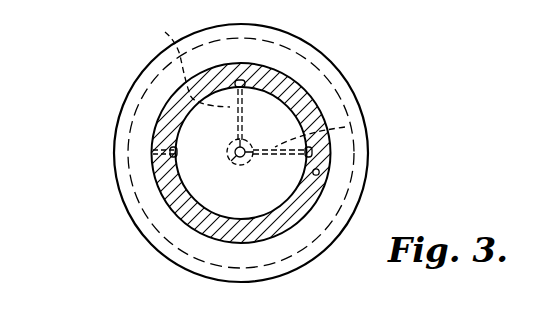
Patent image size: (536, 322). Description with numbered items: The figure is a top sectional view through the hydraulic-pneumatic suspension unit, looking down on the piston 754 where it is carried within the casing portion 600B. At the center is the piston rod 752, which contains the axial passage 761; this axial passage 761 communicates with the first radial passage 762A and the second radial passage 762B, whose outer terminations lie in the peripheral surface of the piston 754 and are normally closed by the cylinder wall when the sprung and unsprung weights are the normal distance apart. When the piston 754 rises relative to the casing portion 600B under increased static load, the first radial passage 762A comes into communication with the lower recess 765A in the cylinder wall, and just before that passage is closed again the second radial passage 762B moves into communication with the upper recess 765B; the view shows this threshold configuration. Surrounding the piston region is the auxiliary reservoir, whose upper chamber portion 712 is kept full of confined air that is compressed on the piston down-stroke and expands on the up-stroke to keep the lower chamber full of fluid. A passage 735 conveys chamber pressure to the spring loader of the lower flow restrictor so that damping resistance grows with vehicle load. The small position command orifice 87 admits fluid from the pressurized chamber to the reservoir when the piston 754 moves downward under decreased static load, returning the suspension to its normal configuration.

The casing portion 600B is at (117, 126).
The upper chamber portion 712 is at (130, 176).
The piston 754 is at (233, 207).
The axial passage 761 is at (238, 158).
The rod 752 is at (250, 159).
The upper recess 765B is at (245, 82).
The lower recess 765A is at (322, 166).
The left pad 87 is at (166, 160).
The second radial passage 762B is at (165, 32).
The first radial passage 762A is at (345, 127).
The passage 735 is at (319, 175).